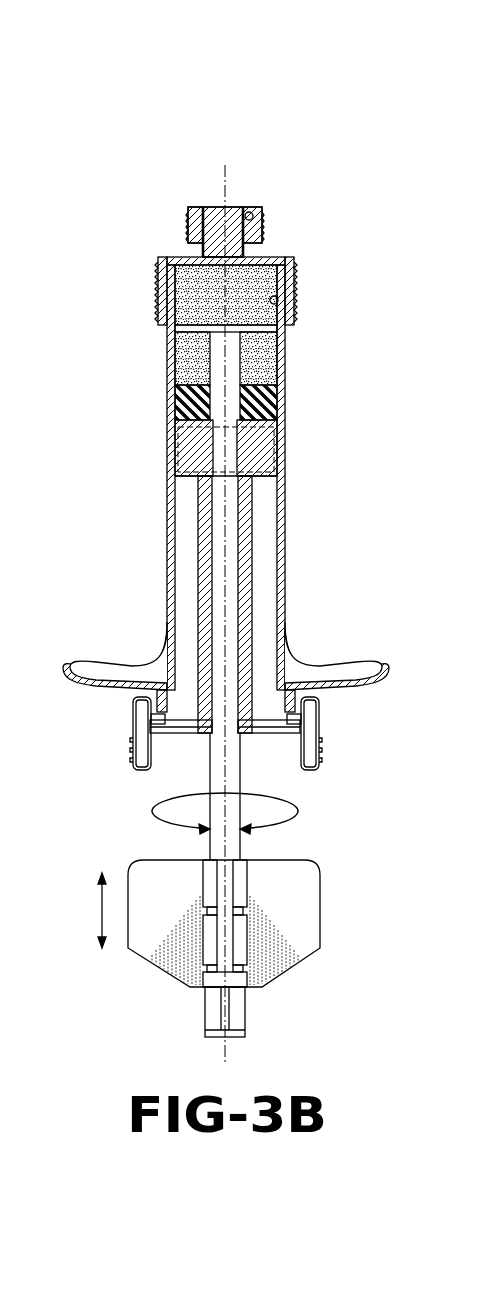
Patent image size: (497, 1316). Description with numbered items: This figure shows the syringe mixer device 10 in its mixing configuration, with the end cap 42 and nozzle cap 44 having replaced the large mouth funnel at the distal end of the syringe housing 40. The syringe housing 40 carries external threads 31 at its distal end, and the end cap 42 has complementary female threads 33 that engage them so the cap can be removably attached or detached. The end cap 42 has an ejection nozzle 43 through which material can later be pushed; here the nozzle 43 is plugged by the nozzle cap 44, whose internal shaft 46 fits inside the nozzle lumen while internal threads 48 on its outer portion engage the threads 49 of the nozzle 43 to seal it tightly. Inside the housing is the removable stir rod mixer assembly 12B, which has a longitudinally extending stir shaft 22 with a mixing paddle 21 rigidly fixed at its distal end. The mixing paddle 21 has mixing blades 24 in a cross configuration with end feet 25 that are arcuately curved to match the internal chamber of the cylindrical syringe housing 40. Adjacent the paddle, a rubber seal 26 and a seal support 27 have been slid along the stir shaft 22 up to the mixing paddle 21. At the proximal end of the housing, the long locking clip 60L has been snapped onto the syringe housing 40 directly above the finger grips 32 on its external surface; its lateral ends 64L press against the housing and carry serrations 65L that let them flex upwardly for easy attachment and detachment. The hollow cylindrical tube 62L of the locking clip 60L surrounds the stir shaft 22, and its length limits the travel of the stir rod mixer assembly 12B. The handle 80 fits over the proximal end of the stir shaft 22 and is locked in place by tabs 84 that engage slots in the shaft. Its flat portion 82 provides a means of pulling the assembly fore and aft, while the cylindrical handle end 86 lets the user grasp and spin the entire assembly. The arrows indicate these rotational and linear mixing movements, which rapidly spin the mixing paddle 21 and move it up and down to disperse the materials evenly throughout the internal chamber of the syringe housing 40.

The syringe mixer device 10 is at (368, 126).
The internal shaft 46 is at (220, 240).
The ejection nozzle 43 is at (200, 213).
The internal threads 48 is at (252, 213).
The threads 49 is at (193, 237).
The nozzle cap 44 is at (268, 233).
The external threads 31 is at (170, 277).
The female threads 33 is at (273, 293).
The mixing paddle 21 is at (255, 325).
The end cap 42 is at (156, 328).
The end feet 25 is at (270, 333).
The mixing blades 24 is at (262, 342).
The seal 26 is at (185, 415).
The syringe housing 40 is at (163, 495).
The seal support 27 is at (258, 452).
The stir shaft 22 is at (218, 617).
The hollow cylindrical tube 62L is at (250, 612).
The finger grips 32 is at (115, 667).
The lateral end 64L is at (135, 722).
The serrations 65L is at (318, 748).
The stir rod mixer assembly 12B is at (205, 763).
The long locking clip 60L is at (321, 773).
The tabs 84 is at (233, 893).
The flat portion 82 is at (300, 930).
The handle 80 is at (157, 983).
The handle end 86 is at (236, 1007).